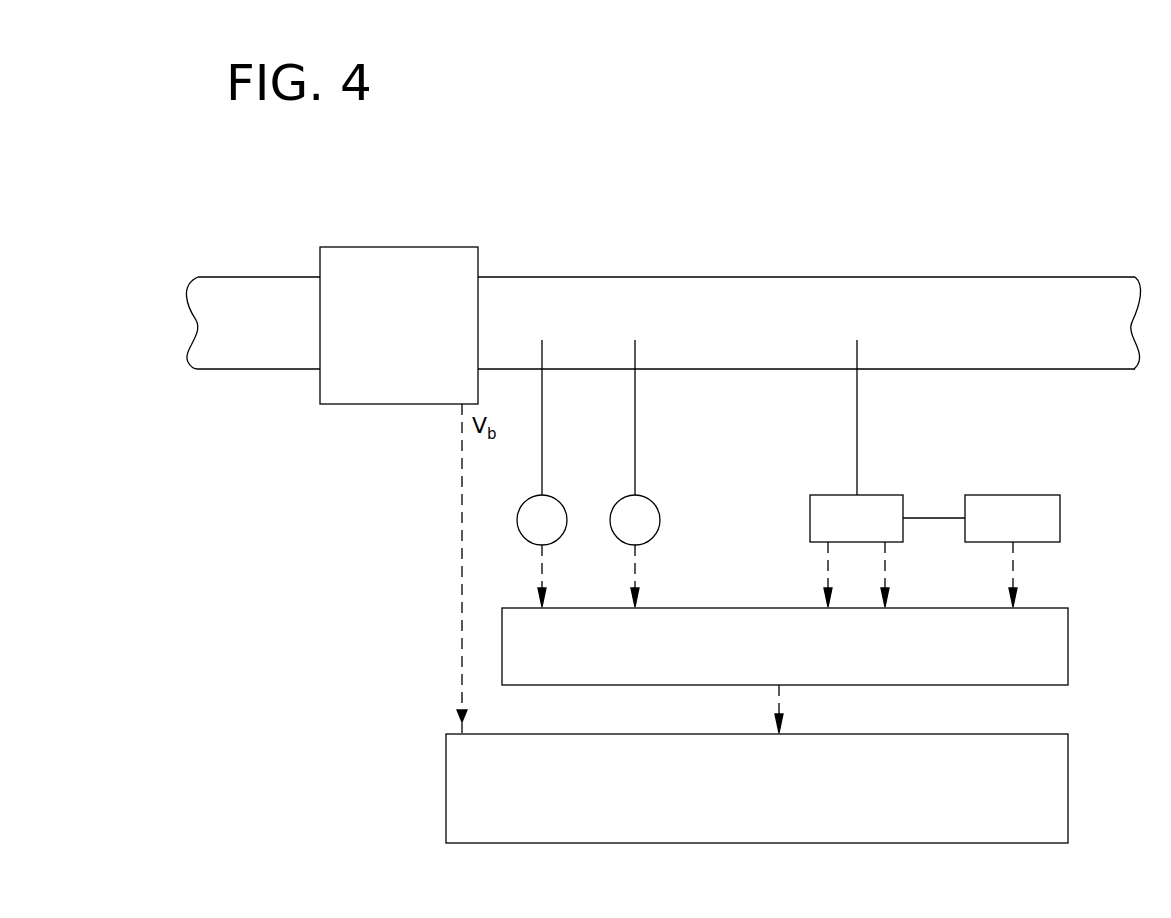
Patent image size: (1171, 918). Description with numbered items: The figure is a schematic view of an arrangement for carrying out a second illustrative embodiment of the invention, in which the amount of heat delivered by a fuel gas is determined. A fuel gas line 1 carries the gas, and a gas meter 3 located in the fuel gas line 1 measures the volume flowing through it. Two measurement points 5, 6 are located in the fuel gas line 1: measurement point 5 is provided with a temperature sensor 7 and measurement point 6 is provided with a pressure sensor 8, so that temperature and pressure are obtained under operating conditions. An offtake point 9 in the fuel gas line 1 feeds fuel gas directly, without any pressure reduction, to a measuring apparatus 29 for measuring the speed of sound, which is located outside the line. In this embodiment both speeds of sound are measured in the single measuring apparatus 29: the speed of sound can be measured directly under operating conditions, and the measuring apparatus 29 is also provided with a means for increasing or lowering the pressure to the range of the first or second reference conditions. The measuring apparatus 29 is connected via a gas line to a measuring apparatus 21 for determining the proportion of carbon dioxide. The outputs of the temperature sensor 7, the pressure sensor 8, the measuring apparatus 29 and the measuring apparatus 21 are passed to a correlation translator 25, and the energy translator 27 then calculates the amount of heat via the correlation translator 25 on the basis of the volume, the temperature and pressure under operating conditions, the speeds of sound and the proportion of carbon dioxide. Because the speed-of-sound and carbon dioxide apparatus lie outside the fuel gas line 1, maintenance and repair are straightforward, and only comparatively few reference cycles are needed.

The fuel gas line 1 is at (263, 296).
The gas meter 3 is at (437, 264).
The measurement point 5 is at (542, 340).
The measurement point 6 is at (635, 340).
The temperature sensor 7 is at (560, 502).
The pressure sensor 8 is at (653, 502).
The offtake point 9 is at (857, 340).
The measuring apparatus for measuring the speed of sound 29 is at (888, 495).
The measuring apparatus for determining the proportion of carbon dioxide 21 is at (1045, 495).
The correlation translator 25 is at (1068, 634).
The energy translator 27 is at (1068, 766).